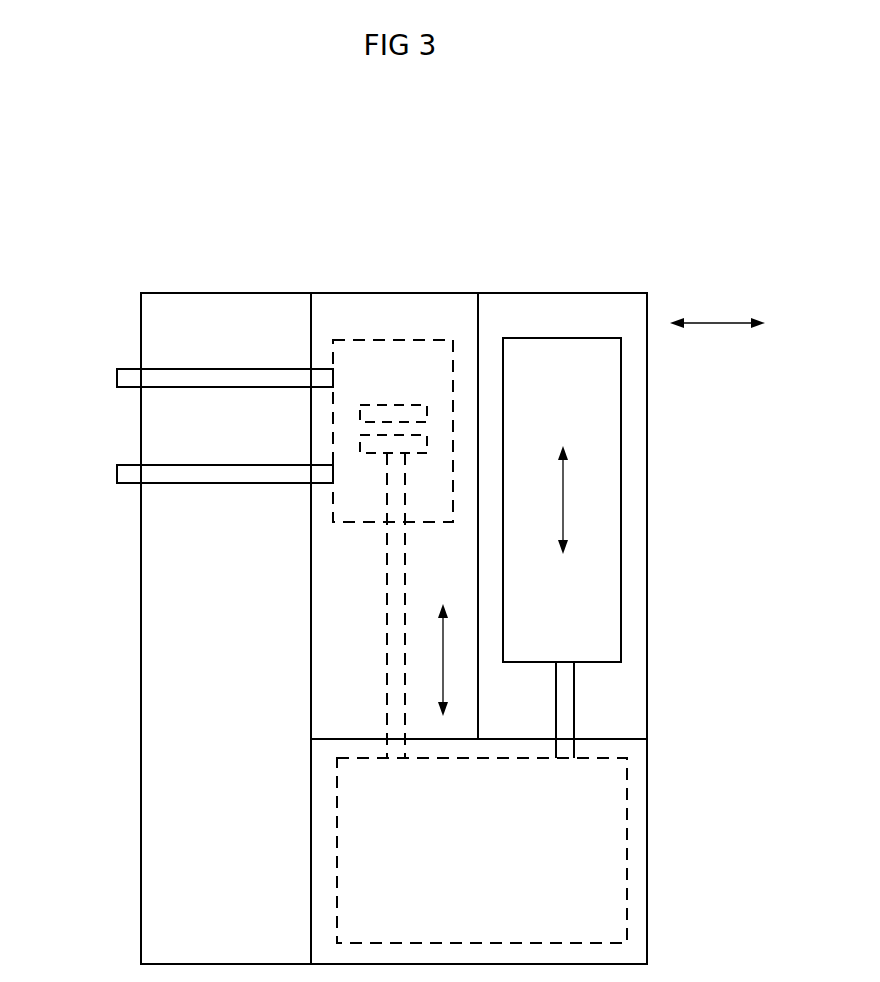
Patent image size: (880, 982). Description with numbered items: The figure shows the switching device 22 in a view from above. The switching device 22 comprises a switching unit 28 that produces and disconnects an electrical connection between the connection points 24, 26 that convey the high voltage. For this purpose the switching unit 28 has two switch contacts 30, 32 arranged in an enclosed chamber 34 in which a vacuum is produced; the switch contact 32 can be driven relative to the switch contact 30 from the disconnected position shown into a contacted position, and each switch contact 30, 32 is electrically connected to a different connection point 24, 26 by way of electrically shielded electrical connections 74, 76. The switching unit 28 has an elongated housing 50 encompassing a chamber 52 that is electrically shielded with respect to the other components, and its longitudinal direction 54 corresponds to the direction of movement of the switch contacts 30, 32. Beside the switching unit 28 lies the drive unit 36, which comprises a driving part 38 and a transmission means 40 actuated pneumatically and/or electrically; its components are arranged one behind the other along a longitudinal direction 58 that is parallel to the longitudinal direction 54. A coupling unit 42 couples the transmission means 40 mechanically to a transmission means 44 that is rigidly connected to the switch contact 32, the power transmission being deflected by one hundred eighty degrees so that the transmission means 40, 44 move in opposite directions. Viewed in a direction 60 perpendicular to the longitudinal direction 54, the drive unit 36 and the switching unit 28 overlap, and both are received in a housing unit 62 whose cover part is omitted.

The switching device 22 is at (640, 222).
The connection point 24 is at (115, 380).
The connection point 26 is at (115, 475).
The switching unit 28 is at (327, 290).
The switch contact 30 is at (405, 408).
The switch contact 32 is at (420, 447).
The enclosed chamber 34 is at (383, 350).
The drive unit 36 is at (557, 290).
The driving part 38 is at (595, 460).
The transmission means 40 is at (565, 697).
The coupling unit 42 is at (627, 797).
The transmission means 44 is at (385, 628).
The housing 50 is at (440, 740).
The chamber 52 is at (332, 553).
The longitudinal direction 54 is at (443, 663).
The longitudinal direction 58 is at (565, 503).
The direction 60 is at (717, 324).
The housing unit 62 is at (650, 870).
The electrical connection 74 is at (170, 388).
The electrical connection 76 is at (170, 484).